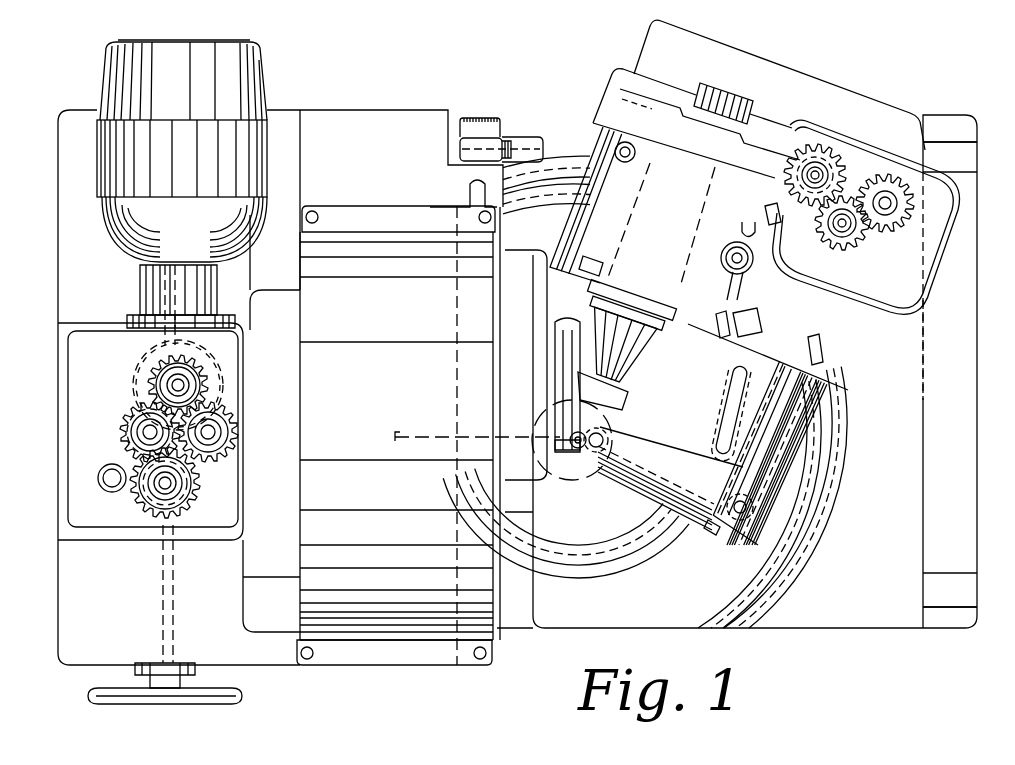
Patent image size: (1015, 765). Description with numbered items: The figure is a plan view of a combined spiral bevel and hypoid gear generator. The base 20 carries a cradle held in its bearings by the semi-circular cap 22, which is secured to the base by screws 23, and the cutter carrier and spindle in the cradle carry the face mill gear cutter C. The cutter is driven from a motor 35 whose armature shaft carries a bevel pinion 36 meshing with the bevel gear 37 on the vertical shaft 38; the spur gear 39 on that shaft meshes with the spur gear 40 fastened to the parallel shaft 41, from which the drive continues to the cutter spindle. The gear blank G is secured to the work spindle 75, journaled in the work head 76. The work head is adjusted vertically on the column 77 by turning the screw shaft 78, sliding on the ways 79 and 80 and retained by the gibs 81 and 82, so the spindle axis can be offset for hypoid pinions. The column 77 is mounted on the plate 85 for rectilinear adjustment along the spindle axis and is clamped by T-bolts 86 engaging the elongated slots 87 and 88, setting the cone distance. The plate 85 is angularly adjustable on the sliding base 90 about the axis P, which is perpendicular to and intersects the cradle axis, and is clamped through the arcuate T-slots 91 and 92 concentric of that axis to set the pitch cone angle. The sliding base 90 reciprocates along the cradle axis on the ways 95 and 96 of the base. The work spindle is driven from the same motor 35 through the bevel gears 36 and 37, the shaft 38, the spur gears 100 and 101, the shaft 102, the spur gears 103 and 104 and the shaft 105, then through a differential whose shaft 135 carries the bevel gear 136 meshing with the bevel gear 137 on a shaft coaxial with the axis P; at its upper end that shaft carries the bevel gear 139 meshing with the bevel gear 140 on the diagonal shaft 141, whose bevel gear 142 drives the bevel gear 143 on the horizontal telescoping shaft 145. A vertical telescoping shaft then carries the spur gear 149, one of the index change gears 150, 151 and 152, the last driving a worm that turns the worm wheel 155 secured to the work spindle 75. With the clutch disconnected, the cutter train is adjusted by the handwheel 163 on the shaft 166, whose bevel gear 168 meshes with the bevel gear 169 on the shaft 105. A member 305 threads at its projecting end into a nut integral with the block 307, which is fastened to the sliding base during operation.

The base 20 is at (964, 540).
The semi-circular cap 22 is at (315, 422).
The screws 23 is at (478, 659).
The motor 35 is at (250, 80).
The bevel pinion 36 is at (155, 350).
The bevel gear 37 is at (148, 362).
The vertical shaft 38 is at (182, 382).
The spur gear 39 is at (205, 387).
The spur gear 40 is at (238, 430).
The parallel shaft 41 is at (212, 430).
The work spindle 75 is at (726, 266).
The work head 76 is at (700, 333).
The column 77 is at (752, 324).
The screw shaft 78 is at (749, 268).
The way 79 is at (722, 304).
The way 80 is at (750, 220).
The gib 81 is at (718, 331).
The gib 82 is at (778, 224).
The plate 85 is at (746, 70).
The T-bolts 86 is at (614, 149).
The elongated slot 87 is at (585, 238).
The elongated slot 88 is at (737, 405).
The sliding base 90 is at (912, 483).
The arcuate T-slot 91 is at (645, 546).
The arcuate T-slot 92 is at (782, 580).
The way 95 is at (952, 150).
The way 96 is at (945, 600).
The spur gear 100 is at (150, 385).
The spur gear 101 is at (121, 436).
The shaft 102 is at (145, 444).
The spur gear 103 is at (126, 413).
The spur gear 104 is at (141, 500).
The shaft 105 is at (186, 486).
The shaft 135 is at (436, 434).
The bevel gear 136 is at (559, 453).
The bevel gear 137 is at (583, 452).
The bevel gear 139 is at (590, 458).
The bevel gear 140 is at (606, 438).
The diagonal shaft 141 is at (669, 462).
The bevel gear 142 is at (736, 524).
The bevel gear 143 is at (751, 494).
The horizontal telescoping shaft 145 is at (818, 347).
The spur gear 149 is at (887, 190).
The index change gear 150 is at (840, 246).
The index change gear 151 is at (853, 242).
The index change gear 152 is at (840, 166).
The worm wheel 155 is at (630, 90).
The handwheel 163 is at (238, 700).
The shaft 166 is at (173, 588).
The bevel gear 168 is at (190, 502).
The bevel gear 169 is at (143, 485).
The latch 305 is at (453, 137).
The block 307 is at (523, 136).
The face mill gear cutter C is at (572, 322).
The gear blank G is at (628, 395).
The axis of angular adjustment P is at (580, 452).